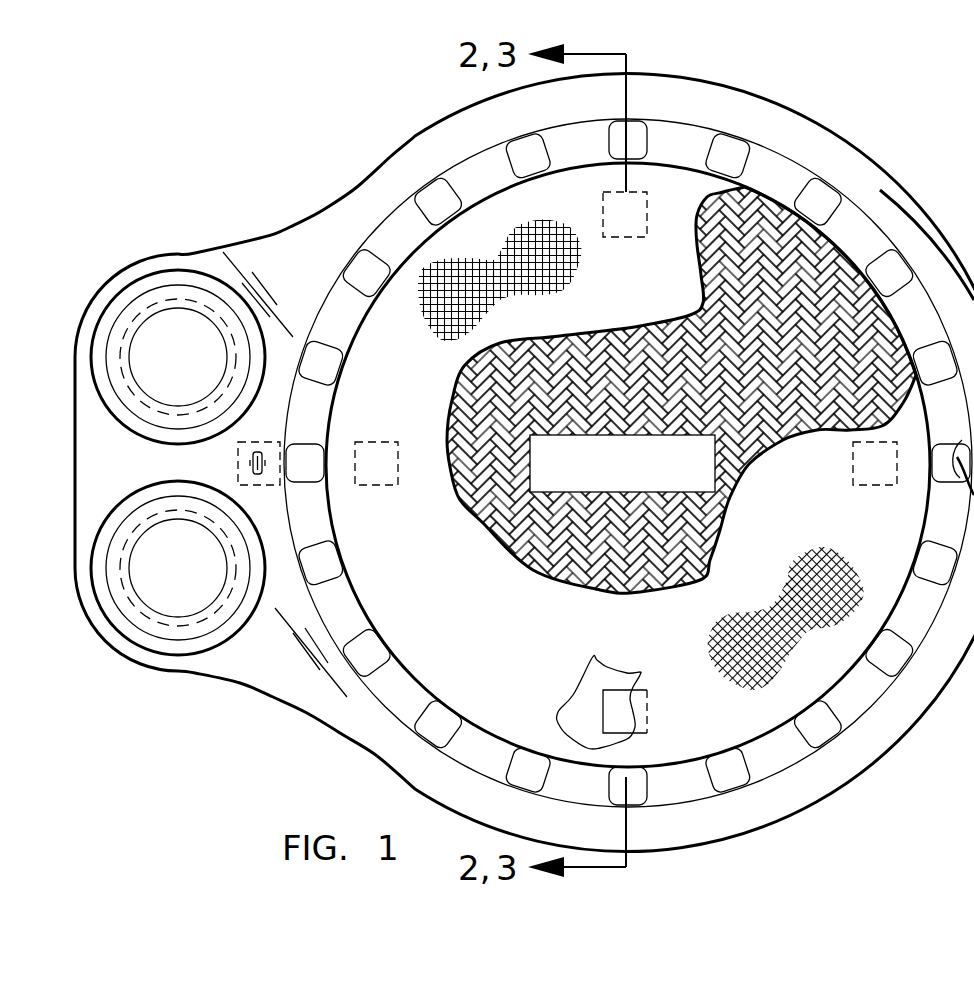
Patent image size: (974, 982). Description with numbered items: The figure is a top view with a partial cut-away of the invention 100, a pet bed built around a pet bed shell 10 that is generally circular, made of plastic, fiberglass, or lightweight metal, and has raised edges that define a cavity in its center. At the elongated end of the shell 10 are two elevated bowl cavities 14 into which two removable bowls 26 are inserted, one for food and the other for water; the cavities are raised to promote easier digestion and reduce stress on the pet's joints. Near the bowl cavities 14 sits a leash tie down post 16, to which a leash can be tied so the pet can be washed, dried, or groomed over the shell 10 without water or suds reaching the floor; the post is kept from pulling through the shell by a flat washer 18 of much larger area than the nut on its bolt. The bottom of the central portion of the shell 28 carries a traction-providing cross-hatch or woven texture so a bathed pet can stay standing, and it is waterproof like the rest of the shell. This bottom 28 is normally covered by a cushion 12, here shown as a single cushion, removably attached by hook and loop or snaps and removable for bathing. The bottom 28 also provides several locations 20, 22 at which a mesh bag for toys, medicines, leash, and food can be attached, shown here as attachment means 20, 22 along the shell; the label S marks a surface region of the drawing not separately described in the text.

The invention 100 is at (857, 118).
The pet bed shell 10 is at (865, 187).
The cushion 12 is at (479, 641).
The bowl cavities 14 is at (193, 368).
The leash tie down post 16 is at (258, 445).
The flat washer 18 is at (258, 482).
The means for attaching a mesh bag 20 is at (710, 470).
The means for attaching a mesh bag 22 is at (647, 237).
The bowls 26 is at (160, 285).
The bottom of the central portion of the shell 28 is at (484, 494).
The surface S is at (927, 245).